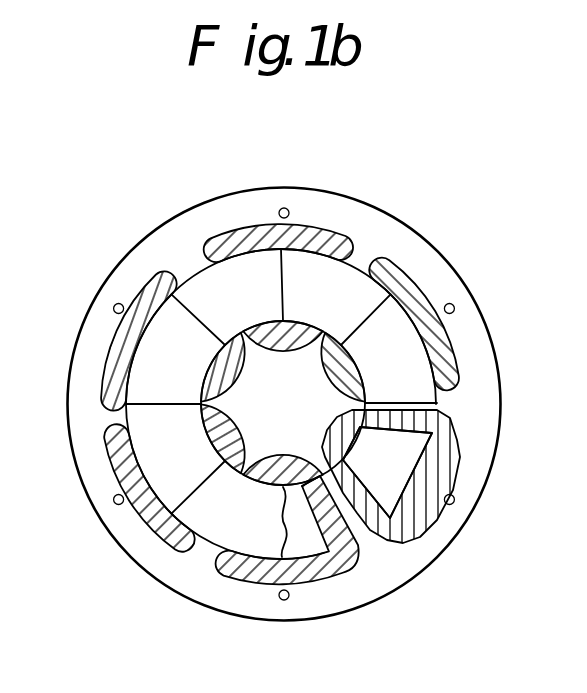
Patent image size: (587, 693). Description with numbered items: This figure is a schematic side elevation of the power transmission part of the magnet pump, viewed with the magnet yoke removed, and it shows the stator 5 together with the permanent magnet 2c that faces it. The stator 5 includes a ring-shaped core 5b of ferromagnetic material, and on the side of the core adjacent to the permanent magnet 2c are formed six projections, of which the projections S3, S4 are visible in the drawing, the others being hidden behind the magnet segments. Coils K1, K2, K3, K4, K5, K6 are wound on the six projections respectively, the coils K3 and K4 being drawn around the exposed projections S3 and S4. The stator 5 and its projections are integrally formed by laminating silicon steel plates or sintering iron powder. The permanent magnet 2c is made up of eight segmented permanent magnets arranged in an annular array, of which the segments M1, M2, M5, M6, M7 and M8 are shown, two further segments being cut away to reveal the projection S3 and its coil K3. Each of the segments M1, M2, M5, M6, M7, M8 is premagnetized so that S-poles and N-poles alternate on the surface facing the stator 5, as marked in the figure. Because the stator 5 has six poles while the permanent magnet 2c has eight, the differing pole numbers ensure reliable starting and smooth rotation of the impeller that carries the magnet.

The stator 5 is at (296, 133).
The ring-shaped core 5b is at (97, 472).
The permanent magnet 2c is at (350, 270).
The segmented permanent magnet M1 is at (321, 297).
The segmented permanent magnet M2 is at (401, 356).
The segmented permanent magnet M5 is at (256, 518).
The segmented permanent magnet M6 is at (191, 465).
The segmented permanent magnet M7 is at (163, 363).
The segmented permanent magnet M8 is at (201, 318).
The coil K1 is at (303, 235).
The coil K2 is at (443, 343).
The coil K3 is at (408, 512).
The coil K4 is at (335, 567).
The coil K5 is at (168, 533).
The coil K6 is at (115, 365).
The projection S3 is at (403, 466).
The projection S4 is at (305, 550).